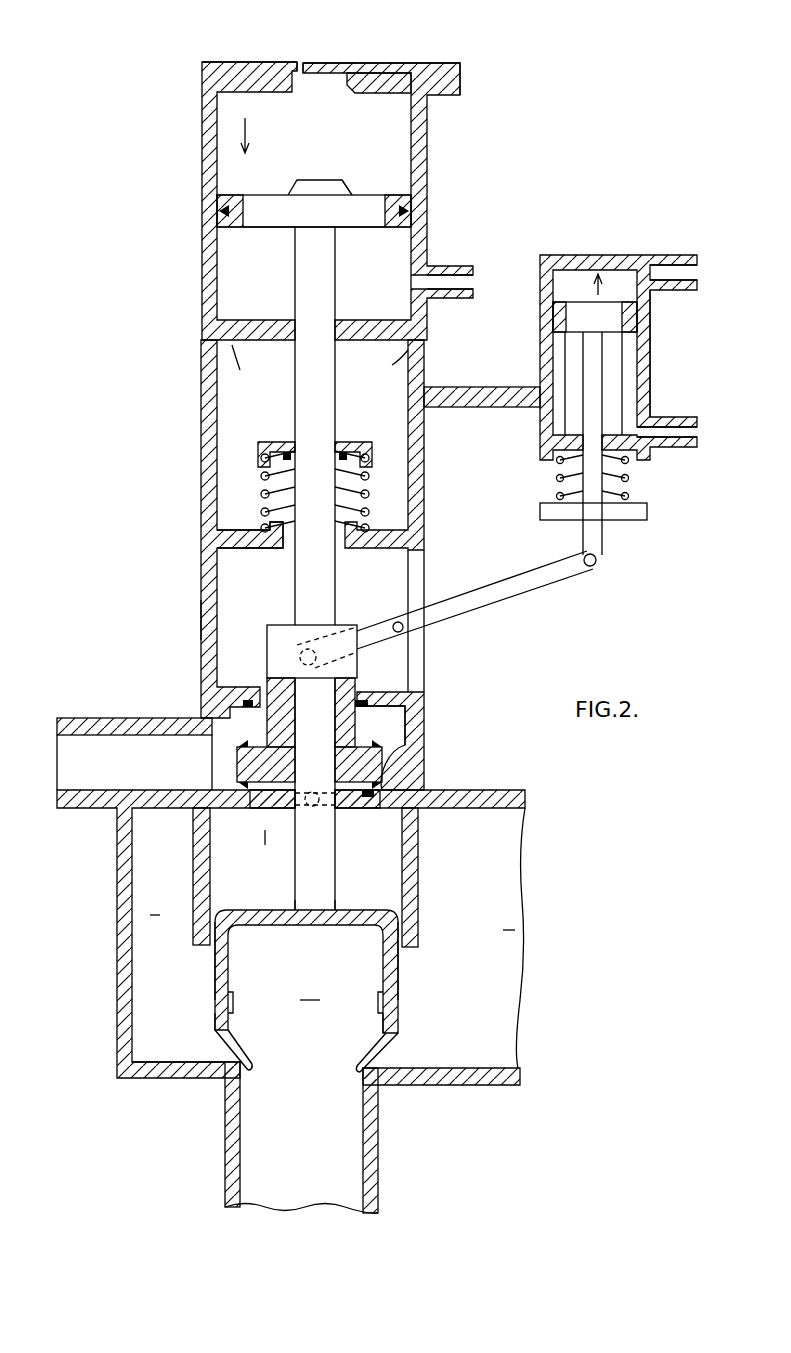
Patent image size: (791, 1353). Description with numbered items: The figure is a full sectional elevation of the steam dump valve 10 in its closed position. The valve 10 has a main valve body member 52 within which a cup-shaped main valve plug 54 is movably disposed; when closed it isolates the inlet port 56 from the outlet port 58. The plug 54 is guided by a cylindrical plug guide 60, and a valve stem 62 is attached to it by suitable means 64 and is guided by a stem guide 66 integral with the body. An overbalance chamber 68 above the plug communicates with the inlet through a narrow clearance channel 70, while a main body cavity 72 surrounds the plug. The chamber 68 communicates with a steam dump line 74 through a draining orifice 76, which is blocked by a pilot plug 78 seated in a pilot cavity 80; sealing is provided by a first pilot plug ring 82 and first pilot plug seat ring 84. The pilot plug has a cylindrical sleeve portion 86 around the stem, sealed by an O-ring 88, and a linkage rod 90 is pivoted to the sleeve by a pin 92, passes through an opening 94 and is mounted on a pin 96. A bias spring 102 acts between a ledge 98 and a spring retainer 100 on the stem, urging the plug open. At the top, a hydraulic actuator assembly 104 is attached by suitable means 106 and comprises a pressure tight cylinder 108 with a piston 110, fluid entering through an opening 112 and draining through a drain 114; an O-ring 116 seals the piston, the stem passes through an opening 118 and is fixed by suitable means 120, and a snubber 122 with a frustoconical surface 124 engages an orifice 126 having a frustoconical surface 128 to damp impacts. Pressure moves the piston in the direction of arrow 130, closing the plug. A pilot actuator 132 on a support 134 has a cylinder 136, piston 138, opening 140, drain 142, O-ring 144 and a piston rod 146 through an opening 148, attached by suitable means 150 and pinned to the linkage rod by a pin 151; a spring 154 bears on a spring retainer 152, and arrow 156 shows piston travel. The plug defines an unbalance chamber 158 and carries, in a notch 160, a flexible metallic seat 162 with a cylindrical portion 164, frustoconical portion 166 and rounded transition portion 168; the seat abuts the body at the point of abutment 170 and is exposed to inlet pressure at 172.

The valve 10 is at (178, 654).
The main valve body member 52 is at (200, 670).
The main valve plug 54 is at (215, 962).
The inlet port 56 is at (503, 935).
The outlet port 58 is at (340, 1140).
The plug guide 60 is at (196, 852).
The valve stem 62 is at (325, 574).
The suitable means 64 is at (283, 908).
The stem guide 66 is at (275, 812).
The overbalance chamber 68 is at (278, 871).
The clearance channel 70 is at (214, 915).
The main body cavity 72 is at (150, 915).
The steam dump line 74 is at (75, 758).
The draining orifice 76 is at (255, 812).
The pilot plug 78 is at (237, 760).
The pilot cavity 80 is at (388, 734).
The first pilot plug ring 82 is at (405, 790).
The first pilot plug seat ring 84 is at (370, 812).
The cylindrical sleeve portion 86 is at (268, 690).
The O-ring 88 is at (365, 752).
The linkage rod 90 is at (518, 594).
The pin 92 is at (306, 655).
The opening 94 is at (425, 555).
The pin 96 is at (397, 622).
The ledge 98 is at (262, 548).
The spring retainer 100 is at (355, 442).
The bias spring 102 is at (262, 490).
The hydraulic actuator assembly 104 is at (193, 162).
The suitable means 106 is at (315, 370).
The pressure tight cylinder 108 is at (424, 122).
The piston 110 is at (372, 222).
The opening 112 is at (460, 72).
The drain 114 is at (472, 282).
The O-ring 116 is at (225, 212).
The opening 118 is at (298, 340).
The suitable means 120 is at (293, 232).
The snubber 122 is at (316, 182).
The frustoconical surface 124 is at (343, 185).
The orifice 126 is at (300, 68).
The frustoconical surface 128 is at (326, 78).
The arrow 130 is at (245, 128).
The pilot actuator 132 is at (709, 361).
The support 134 is at (485, 387).
The pressure tight cylinder 136 is at (650, 316).
The piston 138 is at (612, 320).
The opening 140 is at (697, 425).
The drain 142 is at (697, 272).
The O-ring 144 is at (553, 318).
The piston rod 146 is at (601, 400).
The opening 148 is at (585, 432).
The suitable means 150 is at (585, 330).
The pin 151 is at (597, 560).
The spring retainer 152 is at (648, 512).
The spring 154 is at (625, 482).
The arrow 156 is at (605, 282).
The unbalance chamber 158 is at (337, 994).
The notch 160 is at (388, 1002).
The flexible metallic seat 162 is at (398, 1040).
The cylindrical portion 164 is at (225, 1010).
The frustoconical portion 166 is at (240, 1055).
The rounded transition portion 168 is at (218, 1030).
The point of abutment 170 is at (222, 1078).
The exposed seat portion 172 is at (385, 1058).